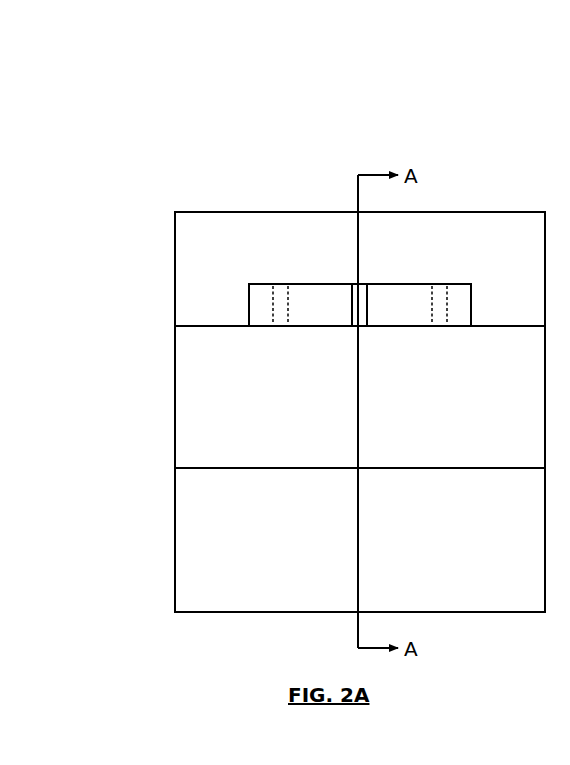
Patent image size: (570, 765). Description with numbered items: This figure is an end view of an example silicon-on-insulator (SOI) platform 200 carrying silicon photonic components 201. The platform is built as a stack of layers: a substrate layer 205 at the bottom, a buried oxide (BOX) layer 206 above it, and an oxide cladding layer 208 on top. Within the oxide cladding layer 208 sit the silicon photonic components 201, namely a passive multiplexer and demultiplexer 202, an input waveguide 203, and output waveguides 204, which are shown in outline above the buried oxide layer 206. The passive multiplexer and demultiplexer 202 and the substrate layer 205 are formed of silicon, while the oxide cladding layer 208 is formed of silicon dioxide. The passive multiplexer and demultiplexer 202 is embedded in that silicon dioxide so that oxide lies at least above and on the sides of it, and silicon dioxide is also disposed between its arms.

The silicon-on-insulator (SOI) platform 200 is at (352, 128).
The silicon photonic components 201 is at (248, 265).
The passive multiplexer and demultiplexer 202 is at (342, 283).
The input waveguide 203 is at (368, 298).
The output waveguides 204 is at (290, 308).
The substrate layer 205 is at (175, 530).
The buried oxide (BOX) layer 206 is at (175, 392).
The oxide cladding layer 208 is at (245, 212).